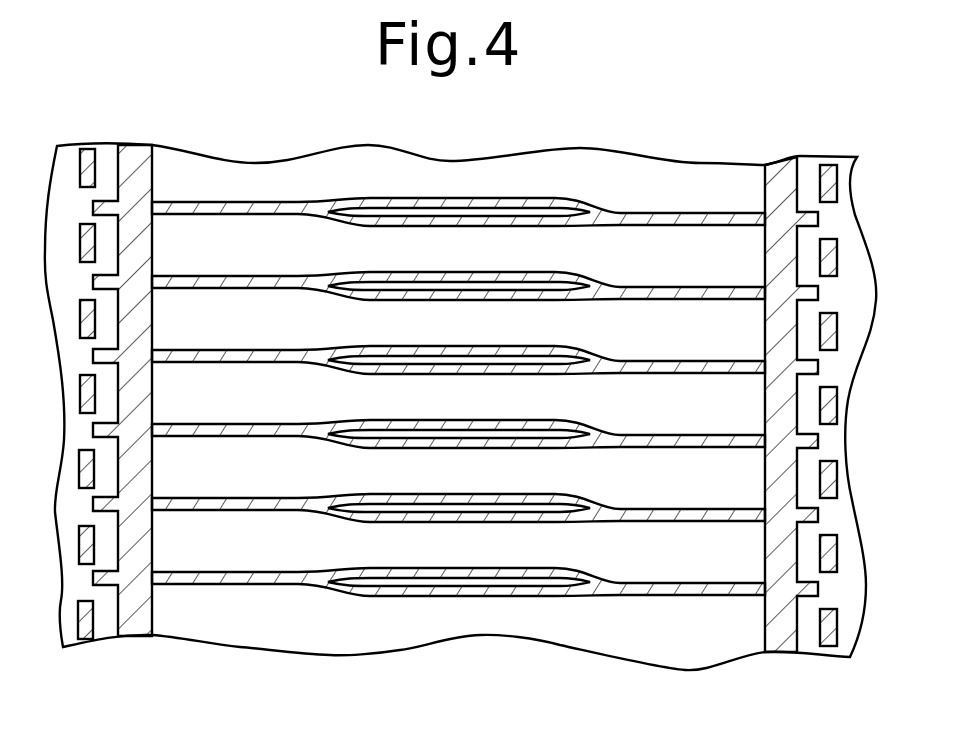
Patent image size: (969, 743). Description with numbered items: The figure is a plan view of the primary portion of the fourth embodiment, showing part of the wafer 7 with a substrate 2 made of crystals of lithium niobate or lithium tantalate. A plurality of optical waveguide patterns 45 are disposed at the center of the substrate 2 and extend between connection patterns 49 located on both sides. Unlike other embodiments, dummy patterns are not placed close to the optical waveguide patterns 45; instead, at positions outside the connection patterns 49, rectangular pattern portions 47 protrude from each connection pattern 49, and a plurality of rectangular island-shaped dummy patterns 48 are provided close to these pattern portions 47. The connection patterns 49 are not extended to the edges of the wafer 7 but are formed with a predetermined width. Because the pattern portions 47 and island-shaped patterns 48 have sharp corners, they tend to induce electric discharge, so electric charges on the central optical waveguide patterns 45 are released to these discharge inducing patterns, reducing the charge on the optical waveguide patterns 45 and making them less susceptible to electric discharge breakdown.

The wafer 7 is at (862, 165).
The substrate 2 is at (665, 648).
The optical waveguide patterns 45 is at (556, 238).
The rectangular pattern portions 47 is at (103, 578).
The island-shaped dummy patterns 48 is at (83, 612).
The connection patterns 49 is at (130, 622).